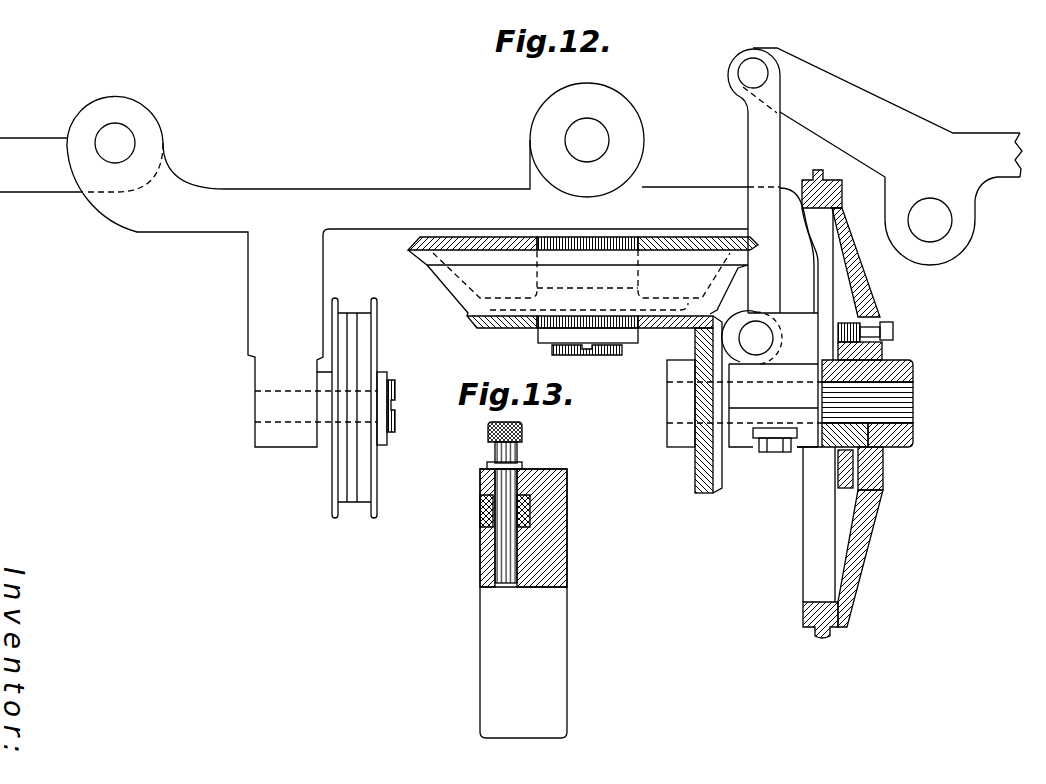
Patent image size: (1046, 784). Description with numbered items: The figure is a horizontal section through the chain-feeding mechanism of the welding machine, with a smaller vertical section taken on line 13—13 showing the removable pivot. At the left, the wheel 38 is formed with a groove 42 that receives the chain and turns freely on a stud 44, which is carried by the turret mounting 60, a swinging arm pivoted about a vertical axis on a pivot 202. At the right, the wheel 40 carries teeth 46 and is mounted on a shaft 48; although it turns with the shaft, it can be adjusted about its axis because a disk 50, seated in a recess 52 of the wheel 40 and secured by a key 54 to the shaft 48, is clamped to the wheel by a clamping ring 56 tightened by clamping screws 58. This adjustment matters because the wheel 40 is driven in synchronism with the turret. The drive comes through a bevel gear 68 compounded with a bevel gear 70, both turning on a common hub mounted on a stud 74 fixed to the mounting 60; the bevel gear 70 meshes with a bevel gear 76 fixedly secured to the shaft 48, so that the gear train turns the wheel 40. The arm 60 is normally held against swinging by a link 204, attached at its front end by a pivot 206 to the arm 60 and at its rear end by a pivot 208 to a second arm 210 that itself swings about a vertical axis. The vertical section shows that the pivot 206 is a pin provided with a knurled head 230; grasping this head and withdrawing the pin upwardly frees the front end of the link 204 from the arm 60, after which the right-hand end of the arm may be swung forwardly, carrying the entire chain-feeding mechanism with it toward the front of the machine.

In FIG. 12, the wheel 38 is at (378, 325).
In FIG. 12, the wheel 40 is at (865, 268).
In FIG. 12, the groove 42 is at (352, 343).
In FIG. 12, the stud 44 is at (262, 403).
In FIG. 12, the teeth 46 is at (825, 181).
In FIG. 12, the shaft 48 is at (898, 397).
In FIG. 12, the disk 50 is at (885, 355).
In FIG. 12, the recess 52 is at (878, 453).
In FIG. 12, the key 54 is at (914, 368).
In FIG. 12, the clamping ring 56 is at (846, 322).
In FIG. 12, the clamping screws 58 is at (895, 329).
In FIG. 12, the turret mounting 60 is at (437, 192).
In FIG. 13, the turret mounting 60 is at (480, 567).
In FIG. 12, the bevel gear 68 is at (420, 243).
In FIG. 12, the bevel gear 70 is at (510, 329).
In FIG. 12, the stud 74 is at (600, 355).
In FIG. 12, the bevel gear 76 is at (704, 485).
In FIG. 12, the pivot 202 is at (135, 141).
In FIG. 12, the link 204 is at (765, 150).
In FIG. 13, the link 204 is at (480, 506).
In FIG. 12, the pivot 206 is at (762, 332).
In FIG. 13, the pivot 206 is at (510, 452).
In FIG. 12, the pivot 208 is at (742, 68).
In FIG. 12, the second arm 210 is at (870, 90).
In FIG. 13, the knurled head 230 is at (525, 432).
In FIG. 12, the section line 13- 13 is at (728, 338).